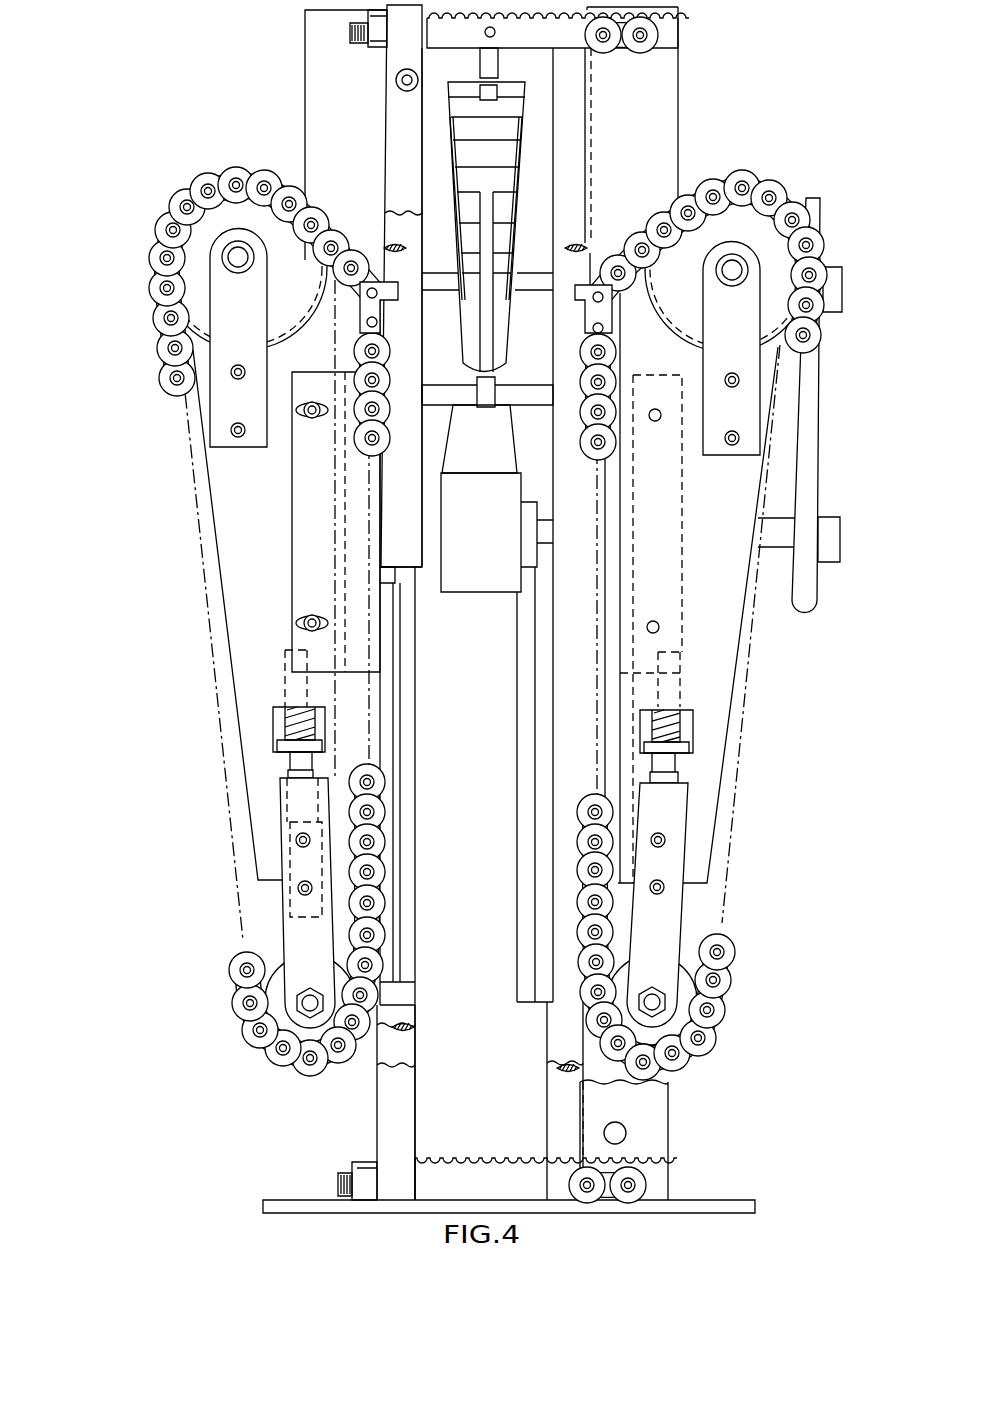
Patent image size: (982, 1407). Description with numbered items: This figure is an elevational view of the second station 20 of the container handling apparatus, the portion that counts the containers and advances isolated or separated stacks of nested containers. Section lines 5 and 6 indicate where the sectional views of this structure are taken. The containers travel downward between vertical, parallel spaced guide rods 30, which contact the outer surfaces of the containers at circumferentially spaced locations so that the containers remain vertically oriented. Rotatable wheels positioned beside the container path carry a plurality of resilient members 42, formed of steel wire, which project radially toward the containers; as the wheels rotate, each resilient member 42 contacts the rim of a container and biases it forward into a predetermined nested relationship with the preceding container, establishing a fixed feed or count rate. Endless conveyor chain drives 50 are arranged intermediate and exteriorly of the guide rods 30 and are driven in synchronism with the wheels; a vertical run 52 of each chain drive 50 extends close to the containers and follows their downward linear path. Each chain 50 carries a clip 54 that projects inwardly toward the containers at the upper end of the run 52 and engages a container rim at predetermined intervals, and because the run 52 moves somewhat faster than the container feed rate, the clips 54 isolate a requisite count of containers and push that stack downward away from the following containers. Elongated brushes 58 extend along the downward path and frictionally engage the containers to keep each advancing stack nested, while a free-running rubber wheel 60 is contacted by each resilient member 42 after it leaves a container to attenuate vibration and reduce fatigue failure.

The section line 5- 5 is at (185, 22).
The section line 6- 6 is at (492, 78).
The second station 20 is at (214, 663).
The vertical guide rods 30 is at (387, 163).
The resilient members 42 is at (527, 96).
The endless conveyor chain drives 50 is at (168, 401).
The vertical run 52 is at (358, 437).
The clip 54 is at (384, 280).
The elongated brushes 58 is at (415, 862).
The free-running rubber wheel 60 is at (456, 594).